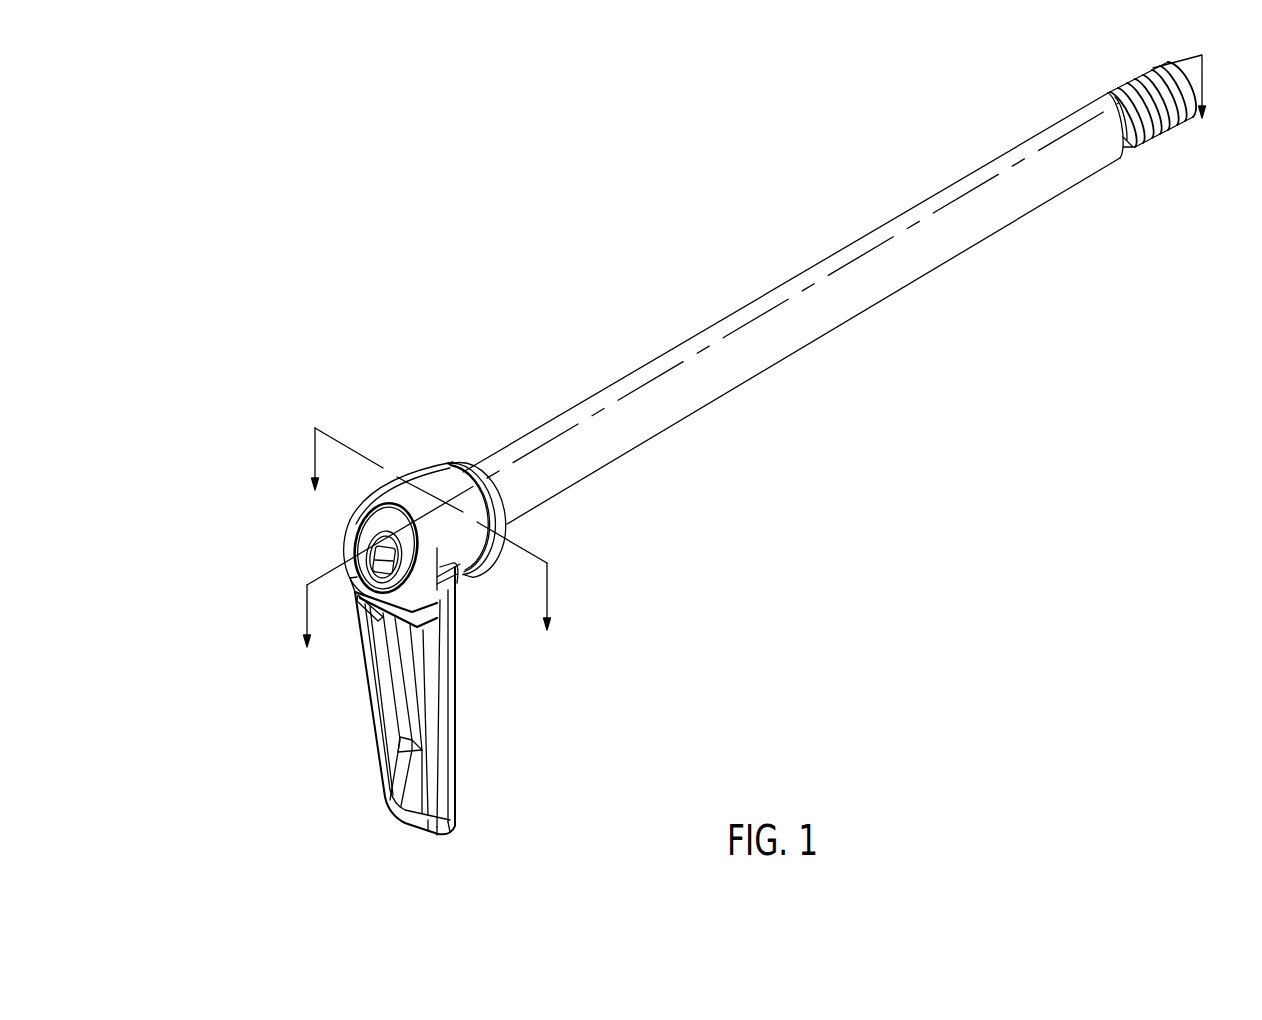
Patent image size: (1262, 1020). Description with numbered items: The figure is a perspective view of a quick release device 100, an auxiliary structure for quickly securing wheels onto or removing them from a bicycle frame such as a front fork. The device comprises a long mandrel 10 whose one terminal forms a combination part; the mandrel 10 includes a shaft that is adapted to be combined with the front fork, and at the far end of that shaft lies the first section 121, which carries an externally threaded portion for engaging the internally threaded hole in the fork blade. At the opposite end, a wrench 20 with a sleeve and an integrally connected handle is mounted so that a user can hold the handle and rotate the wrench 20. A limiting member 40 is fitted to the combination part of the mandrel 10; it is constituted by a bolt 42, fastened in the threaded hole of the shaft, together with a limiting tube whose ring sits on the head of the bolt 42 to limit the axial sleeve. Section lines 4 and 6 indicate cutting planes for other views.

The quick release device 100 is at (386, 278).
The mandrel 10 is at (824, 312).
The first section 121 is at (1158, 138).
The wrench 20 is at (466, 723).
The limiting member 40 is at (326, 550).
The bolt 42 is at (386, 570).
The section line 4- 4 is at (752, 369).
The section line 6- 6 is at (426, 547).